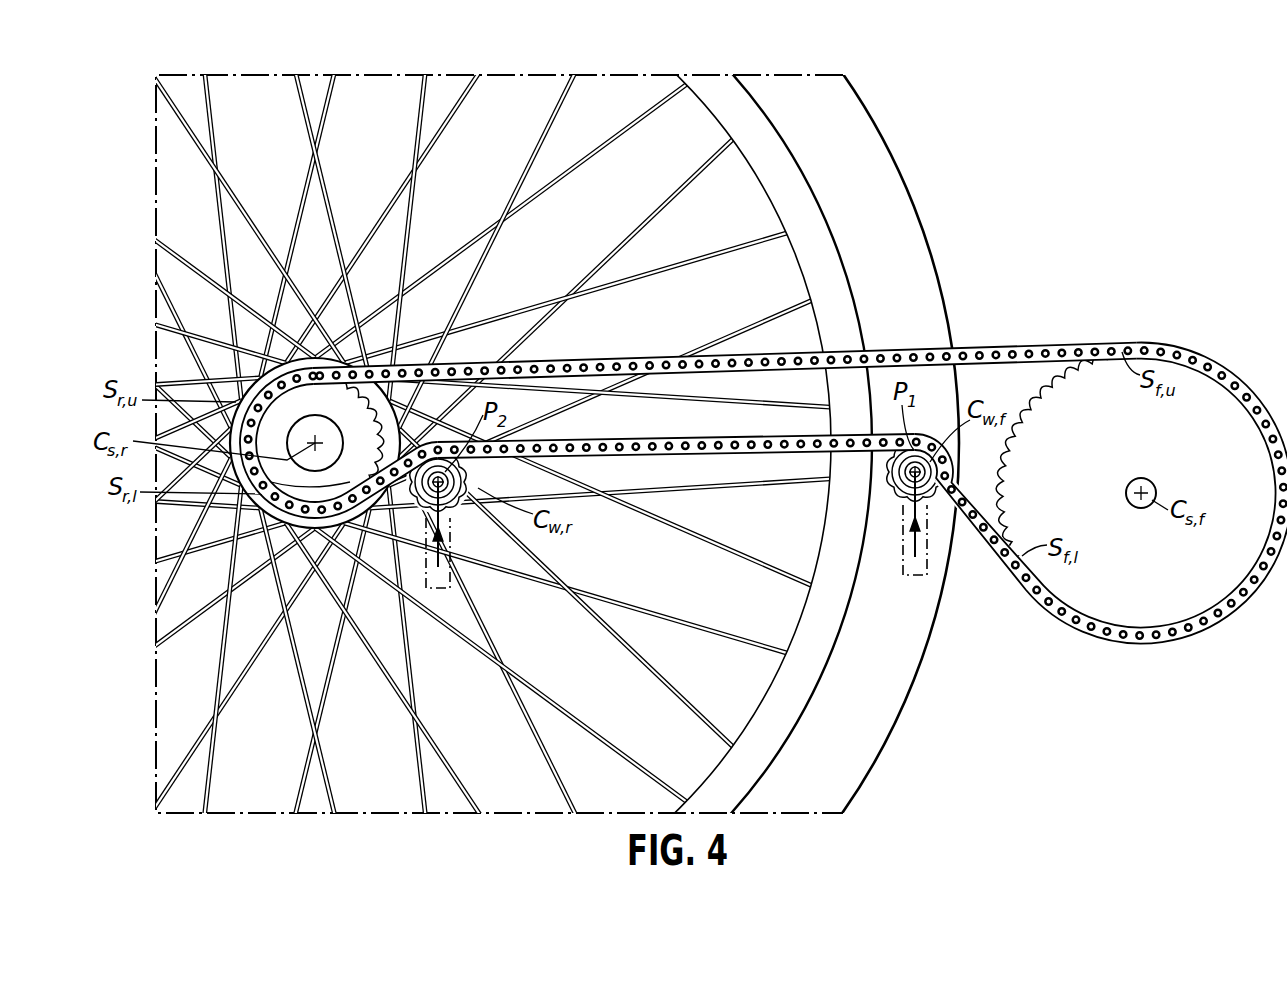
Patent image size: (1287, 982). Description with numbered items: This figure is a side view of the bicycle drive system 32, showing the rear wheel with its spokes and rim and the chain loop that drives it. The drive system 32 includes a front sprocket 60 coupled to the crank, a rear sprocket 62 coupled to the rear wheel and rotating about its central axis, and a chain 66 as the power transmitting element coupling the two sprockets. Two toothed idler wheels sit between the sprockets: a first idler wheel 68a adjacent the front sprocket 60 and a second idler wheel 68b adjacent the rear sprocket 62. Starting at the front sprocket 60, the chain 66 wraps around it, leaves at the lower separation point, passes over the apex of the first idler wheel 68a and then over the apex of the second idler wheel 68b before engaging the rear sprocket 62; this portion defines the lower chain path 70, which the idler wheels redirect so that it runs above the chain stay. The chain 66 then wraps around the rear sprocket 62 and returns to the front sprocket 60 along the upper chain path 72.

The drive system 32 is at (1069, 691).
The front sprocket 60 is at (1232, 468).
The rear sprocket 62 is at (240, 533).
The chain 66 is at (763, 470).
The first idler wheel 68a is at (895, 492).
The second idler wheel 68b is at (452, 545).
The lower chain path 70 is at (612, 454).
The upper chain path 72 is at (1015, 350).